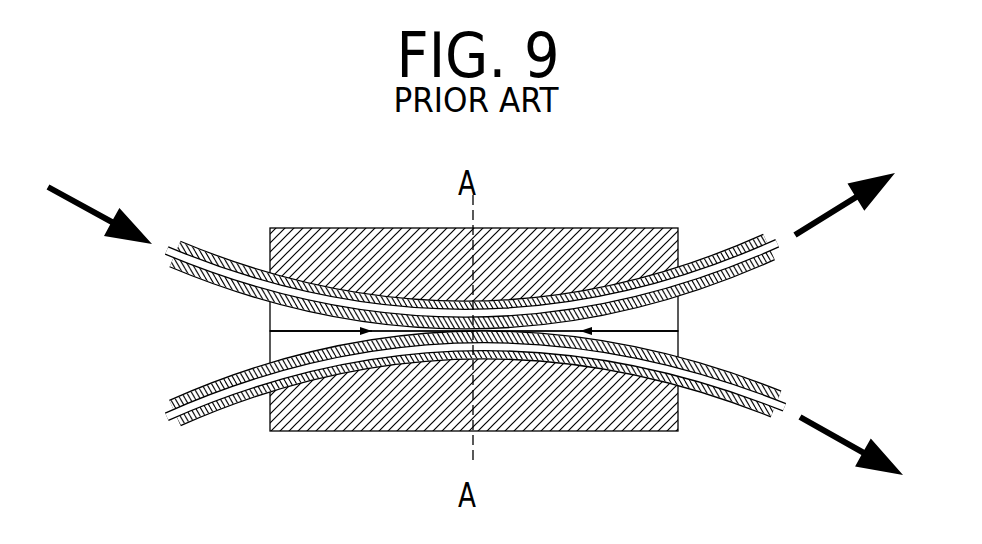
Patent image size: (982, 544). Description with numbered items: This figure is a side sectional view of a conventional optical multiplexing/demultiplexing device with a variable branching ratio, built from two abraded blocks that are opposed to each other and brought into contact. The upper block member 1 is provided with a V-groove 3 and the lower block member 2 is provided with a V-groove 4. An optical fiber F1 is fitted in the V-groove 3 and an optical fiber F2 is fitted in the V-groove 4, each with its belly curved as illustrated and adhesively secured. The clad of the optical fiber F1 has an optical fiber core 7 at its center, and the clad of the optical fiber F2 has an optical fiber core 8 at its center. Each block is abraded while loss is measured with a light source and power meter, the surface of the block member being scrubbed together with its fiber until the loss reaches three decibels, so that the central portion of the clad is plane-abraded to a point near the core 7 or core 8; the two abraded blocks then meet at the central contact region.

The block member 1 is at (582, 240).
The block member 2 is at (595, 417).
The V-groove 3 is at (663, 317).
The V-groove 4 is at (663, 337).
The optical fiber core 7 is at (203, 279).
The optical fiber core 8 is at (210, 417).
The optical fiber F1 is at (203, 249).
The optical fiber F2 is at (733, 408).